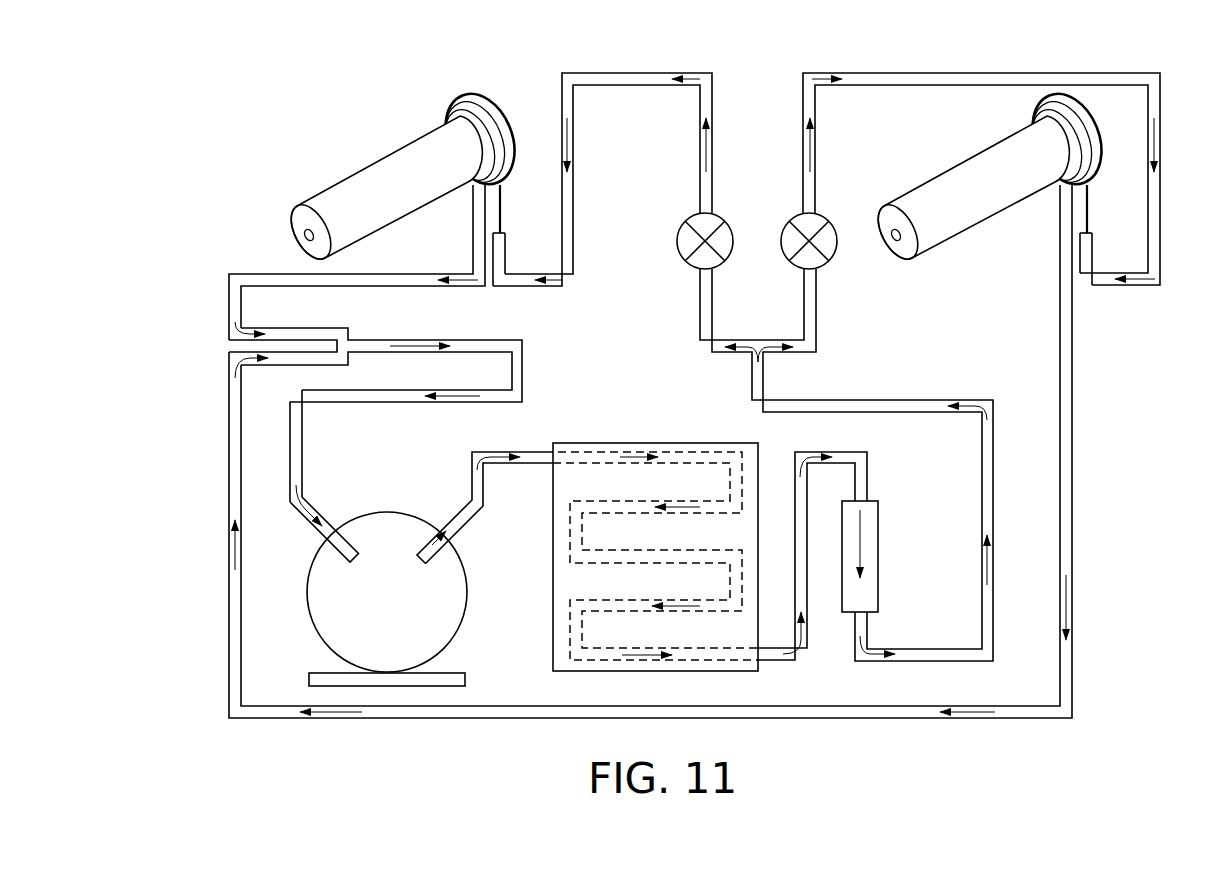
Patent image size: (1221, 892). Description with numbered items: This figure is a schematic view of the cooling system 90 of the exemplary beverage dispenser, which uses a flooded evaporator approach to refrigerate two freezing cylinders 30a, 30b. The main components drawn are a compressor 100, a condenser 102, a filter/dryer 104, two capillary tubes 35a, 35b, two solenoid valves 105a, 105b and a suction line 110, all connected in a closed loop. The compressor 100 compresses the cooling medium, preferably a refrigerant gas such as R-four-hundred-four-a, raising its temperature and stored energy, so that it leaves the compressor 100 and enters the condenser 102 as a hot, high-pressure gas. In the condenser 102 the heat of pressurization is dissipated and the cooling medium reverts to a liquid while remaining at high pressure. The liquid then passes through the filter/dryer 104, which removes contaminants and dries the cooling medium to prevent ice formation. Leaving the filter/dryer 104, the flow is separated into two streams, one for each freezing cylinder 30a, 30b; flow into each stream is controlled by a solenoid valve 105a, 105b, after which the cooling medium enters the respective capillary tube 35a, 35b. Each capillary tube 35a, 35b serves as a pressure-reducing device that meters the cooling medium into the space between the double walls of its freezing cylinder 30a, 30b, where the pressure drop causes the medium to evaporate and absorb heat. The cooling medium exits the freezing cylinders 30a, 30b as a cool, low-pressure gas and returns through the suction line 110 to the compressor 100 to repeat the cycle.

The cooling system 90 is at (183, 158).
The freezing cylinder 30a is at (942, 182).
The freezing cylinder 30b is at (358, 182).
The capillary tube 35a is at (1090, 212).
The capillary tube 35b is at (502, 212).
The solenoid valve 105a is at (832, 235).
The solenoid valve 105b is at (687, 238).
The suction line 110 is at (520, 366).
The compressor 100 is at (322, 603).
The condenser 102 is at (560, 617).
The filter/dryer 104 is at (875, 555).